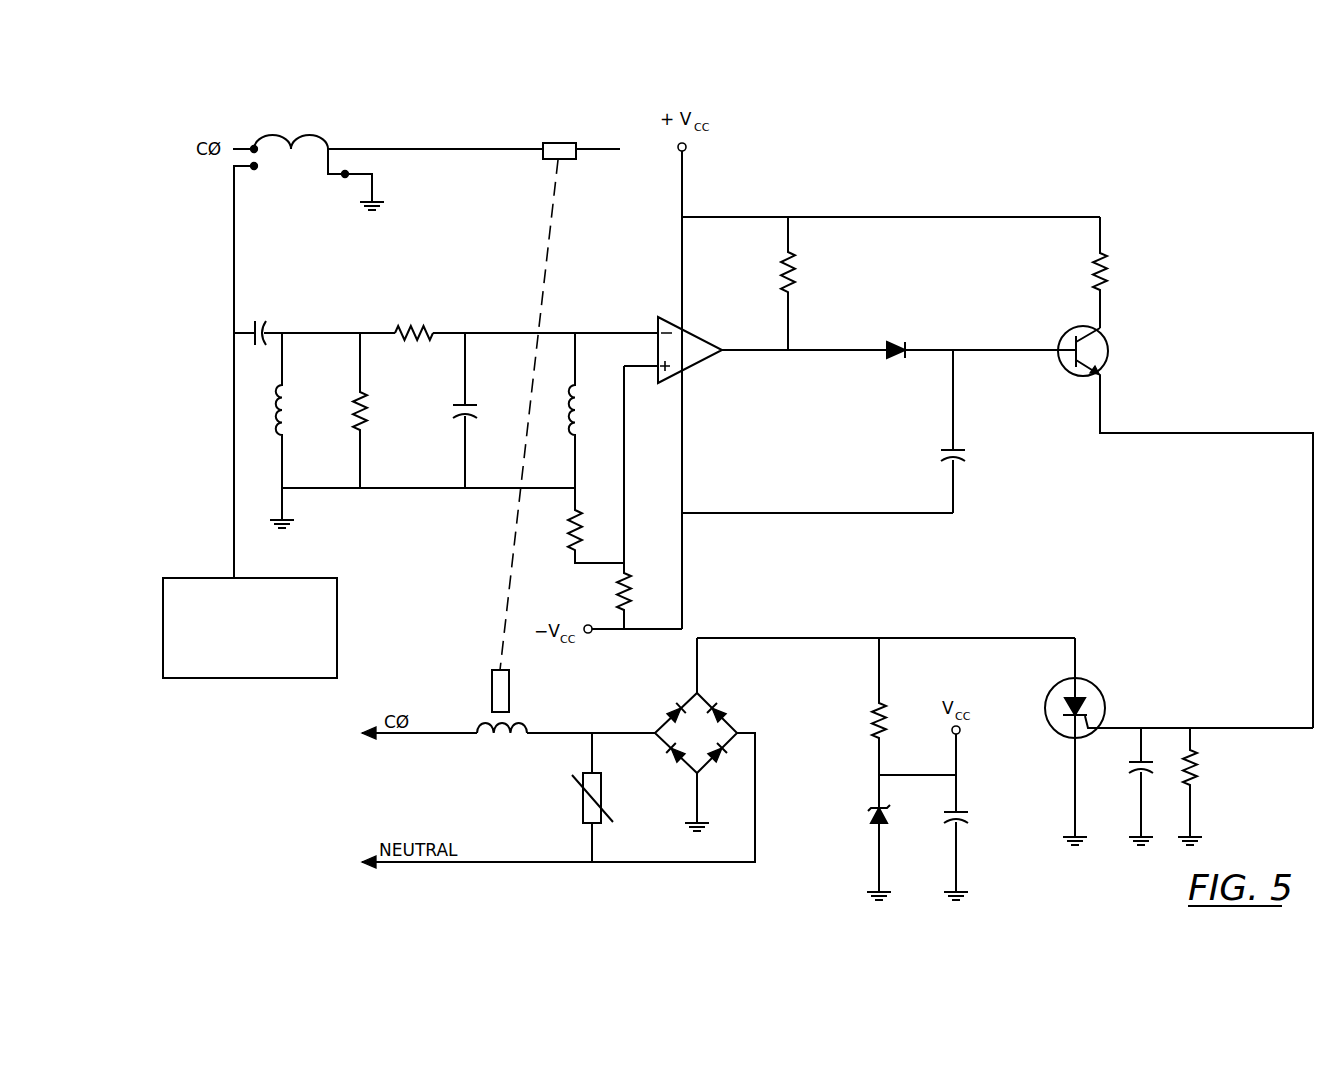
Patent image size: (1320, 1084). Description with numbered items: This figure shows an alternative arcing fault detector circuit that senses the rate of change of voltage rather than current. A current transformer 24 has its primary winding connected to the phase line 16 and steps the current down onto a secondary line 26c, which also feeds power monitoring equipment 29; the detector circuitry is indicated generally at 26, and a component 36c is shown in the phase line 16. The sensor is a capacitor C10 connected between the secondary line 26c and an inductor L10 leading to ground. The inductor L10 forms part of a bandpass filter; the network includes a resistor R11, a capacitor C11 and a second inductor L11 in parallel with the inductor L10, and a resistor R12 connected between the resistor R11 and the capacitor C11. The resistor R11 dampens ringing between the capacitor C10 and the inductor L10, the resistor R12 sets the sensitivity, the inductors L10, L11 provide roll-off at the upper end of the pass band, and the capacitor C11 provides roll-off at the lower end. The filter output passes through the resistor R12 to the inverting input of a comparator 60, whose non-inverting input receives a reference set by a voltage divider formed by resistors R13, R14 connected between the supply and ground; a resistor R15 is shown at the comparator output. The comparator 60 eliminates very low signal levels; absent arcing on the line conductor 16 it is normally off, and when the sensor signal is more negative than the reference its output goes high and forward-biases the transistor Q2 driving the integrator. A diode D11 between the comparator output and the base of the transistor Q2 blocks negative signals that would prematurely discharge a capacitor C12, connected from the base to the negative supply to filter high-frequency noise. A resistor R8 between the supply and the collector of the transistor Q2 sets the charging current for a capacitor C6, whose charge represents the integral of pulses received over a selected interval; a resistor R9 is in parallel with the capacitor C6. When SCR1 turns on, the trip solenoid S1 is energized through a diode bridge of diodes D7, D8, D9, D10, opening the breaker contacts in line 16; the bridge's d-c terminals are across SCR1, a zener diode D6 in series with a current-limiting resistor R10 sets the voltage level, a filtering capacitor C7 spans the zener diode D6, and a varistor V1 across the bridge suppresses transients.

The current transformer 24 is at (310, 130).
The phase line 16 is at (413, 148).
The relay coil 36c is at (538, 394).
The secondary line 26c is at (233, 283).
The power line sensor circuit 26 is at (1217, 268).
The power monitoring equipment 29 is at (312, 578).
The comparator 60 is at (687, 370).
The capacitor C10 is at (286, 309).
The resistor R12 is at (398, 325).
The inductor L10 is at (290, 398).
The resistor R11 is at (370, 410).
The capacitor C11 is at (473, 400).
The second inductor L11 is at (565, 418).
The resistor R13 is at (570, 516).
The resistor R14 is at (617, 608).
The resistor R15 is at (780, 276).
The resistor R8 is at (1095, 277).
The diode D11 is at (898, 342).
The capacitor C12 is at (940, 460).
The transistor Q2 is at (1110, 351).
The trip solenoid S1 is at (500, 746).
The varistor V1 is at (583, 802).
The diode D10 is at (668, 712).
The diode D7 is at (727, 710).
The diode D9 is at (678, 752).
The diode D8 is at (722, 752).
The current-limiting resistor R10 is at (872, 718).
The zener diode D6 is at (868, 815).
The filtering capacitor C7 is at (965, 818).
The SCR SCR1 is at (1105, 690).
The capacitor C6 is at (1135, 768).
The resistor R9 is at (1198, 758).